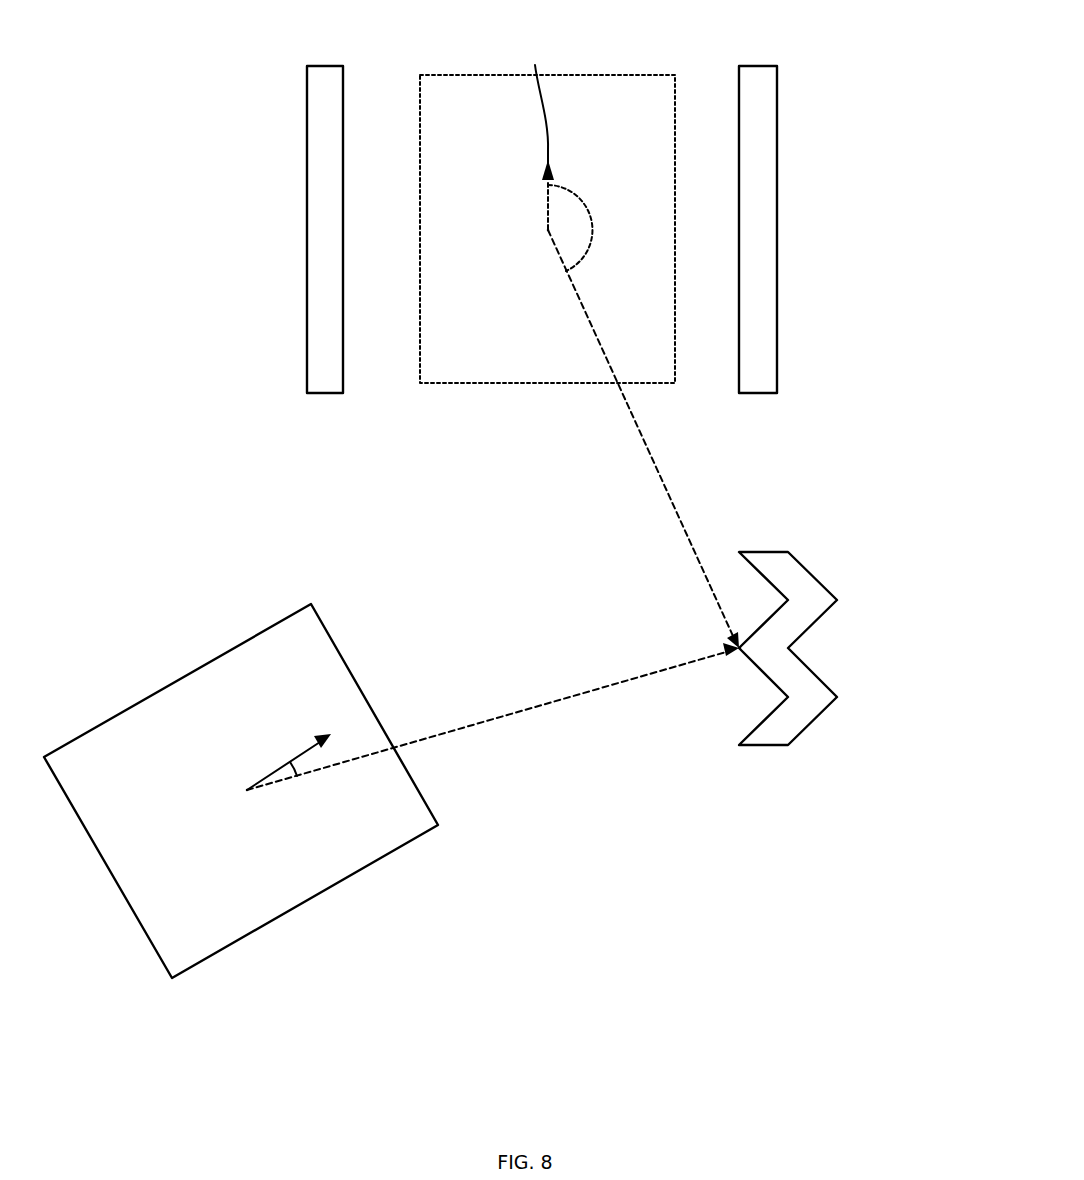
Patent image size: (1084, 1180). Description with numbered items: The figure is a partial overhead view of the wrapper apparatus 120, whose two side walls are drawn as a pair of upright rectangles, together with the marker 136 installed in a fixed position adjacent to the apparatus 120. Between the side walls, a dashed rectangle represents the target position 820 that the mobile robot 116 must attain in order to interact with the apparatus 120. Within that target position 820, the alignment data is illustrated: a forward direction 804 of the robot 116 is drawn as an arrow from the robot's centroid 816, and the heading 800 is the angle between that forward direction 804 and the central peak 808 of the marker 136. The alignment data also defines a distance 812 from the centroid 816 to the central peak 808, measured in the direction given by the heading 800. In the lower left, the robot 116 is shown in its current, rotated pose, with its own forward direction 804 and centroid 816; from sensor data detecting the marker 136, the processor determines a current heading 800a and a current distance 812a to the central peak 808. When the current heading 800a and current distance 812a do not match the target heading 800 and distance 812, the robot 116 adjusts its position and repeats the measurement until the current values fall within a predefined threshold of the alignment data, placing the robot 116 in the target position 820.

The mobile robot 116 is at (291, 927).
The wrapper 120 is at (294, 201).
The marker 136 is at (838, 600).
The heading 800 is at (578, 195).
The current heading 800a is at (300, 772).
The forward direction 804 is at (270, 774).
The central peak 808 is at (741, 649).
The distance 812 is at (654, 463).
The current distance 812a is at (513, 713).
The centroid 816 is at (536, 232).
The target position 820 is at (617, 73).